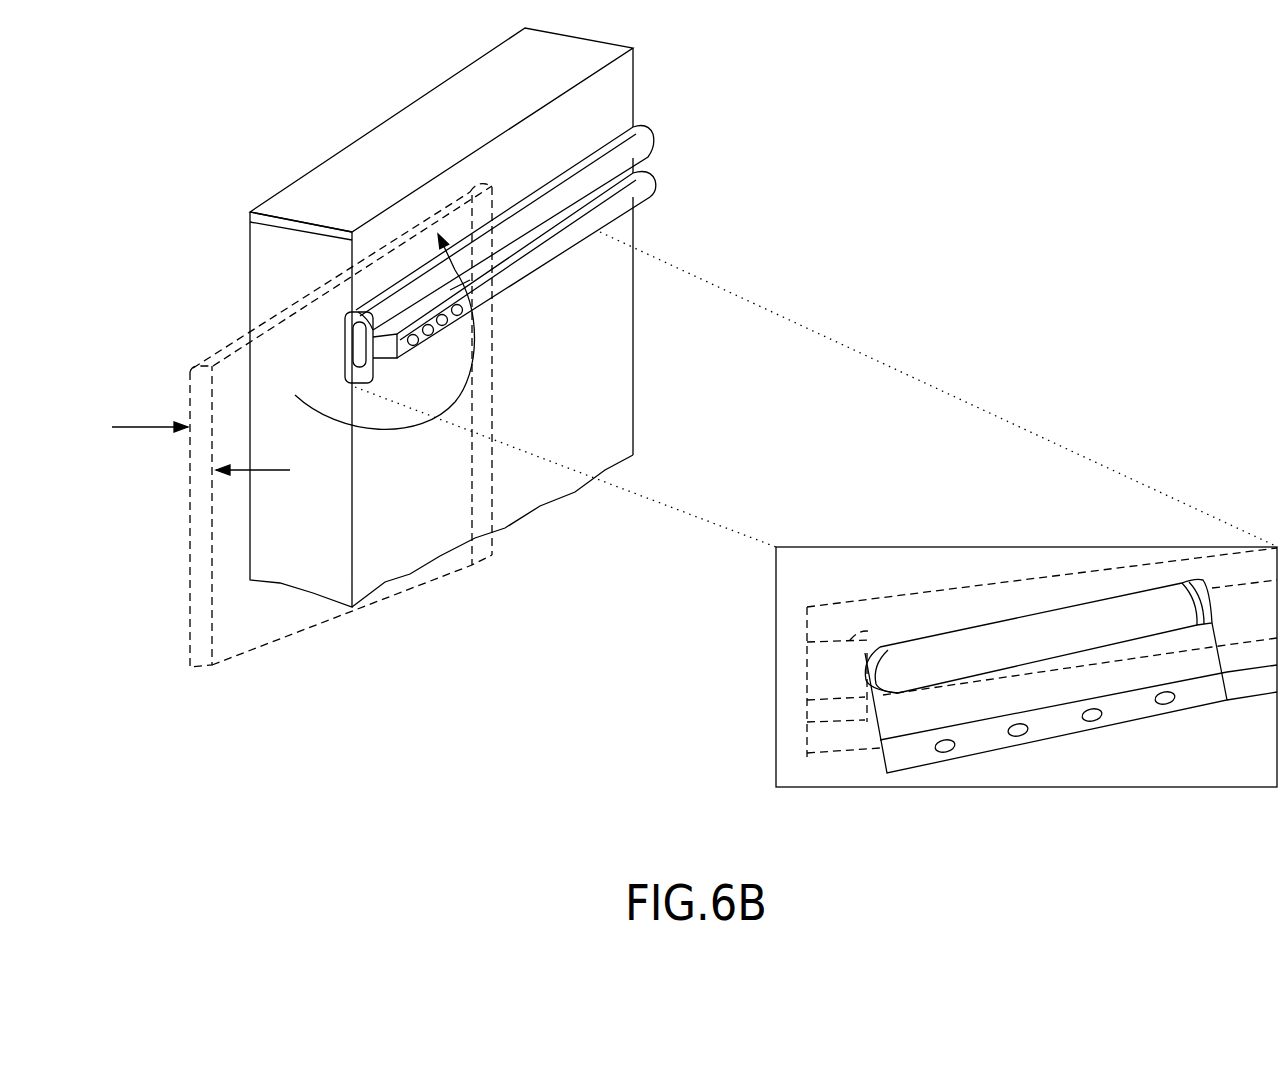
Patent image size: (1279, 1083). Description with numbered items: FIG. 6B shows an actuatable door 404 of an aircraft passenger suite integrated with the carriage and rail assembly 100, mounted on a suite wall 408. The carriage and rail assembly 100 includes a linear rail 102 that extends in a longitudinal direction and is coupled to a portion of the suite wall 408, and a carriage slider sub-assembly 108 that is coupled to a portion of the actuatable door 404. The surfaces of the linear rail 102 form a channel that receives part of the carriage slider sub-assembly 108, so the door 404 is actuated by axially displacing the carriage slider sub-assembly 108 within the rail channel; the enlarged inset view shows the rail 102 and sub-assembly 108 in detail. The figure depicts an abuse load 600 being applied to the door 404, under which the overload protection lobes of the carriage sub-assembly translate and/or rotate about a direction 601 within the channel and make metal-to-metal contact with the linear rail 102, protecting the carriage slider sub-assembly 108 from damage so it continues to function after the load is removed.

The carriage and rail assembly 100 is at (668, 132).
The linear rail 102 is at (800, 592).
The carriage slider sub-assembly 108 is at (1070, 745).
The actuatable door 404 is at (225, 378).
The suite wall 408 is at (618, 93).
The abuse load 600 is at (138, 426).
The direction 601 is at (462, 388).